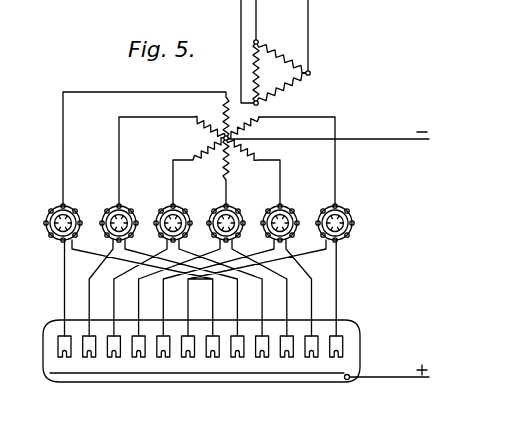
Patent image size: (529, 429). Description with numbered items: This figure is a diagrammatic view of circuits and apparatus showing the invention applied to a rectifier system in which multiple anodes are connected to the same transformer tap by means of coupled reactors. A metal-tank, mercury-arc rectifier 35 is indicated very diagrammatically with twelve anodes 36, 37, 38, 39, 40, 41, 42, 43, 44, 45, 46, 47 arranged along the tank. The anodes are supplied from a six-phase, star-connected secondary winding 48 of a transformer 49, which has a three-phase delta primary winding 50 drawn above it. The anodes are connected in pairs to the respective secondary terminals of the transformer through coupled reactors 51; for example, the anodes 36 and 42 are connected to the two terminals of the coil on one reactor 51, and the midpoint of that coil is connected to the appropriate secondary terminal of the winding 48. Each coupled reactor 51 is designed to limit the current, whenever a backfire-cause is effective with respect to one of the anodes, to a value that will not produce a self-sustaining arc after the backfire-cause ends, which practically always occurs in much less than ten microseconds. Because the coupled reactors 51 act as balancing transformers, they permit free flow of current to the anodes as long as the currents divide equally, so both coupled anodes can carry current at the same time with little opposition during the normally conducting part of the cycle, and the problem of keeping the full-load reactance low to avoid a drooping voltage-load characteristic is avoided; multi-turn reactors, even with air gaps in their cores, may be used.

The metal-tank rectifier 35 is at (362, 339).
The anode 36 is at (57, 345).
The anode 37 is at (86, 358).
The anode 38 is at (112, 358).
The anode 39 is at (137, 358).
The anode 40 is at (162, 358).
The anode 41 is at (187, 358).
The anode 42 is at (212, 358).
The anode 43 is at (237, 358).
The anode 44 is at (262, 358).
The anode 45 is at (287, 358).
The anode 46 is at (312, 358).
The anode 47 is at (336, 358).
The star-connected secondary winding 48 is at (278, 130).
The transformer 49 is at (203, 84).
The delta primary winding 50 is at (297, 57).
The coupled reactor 51 is at (51, 213).